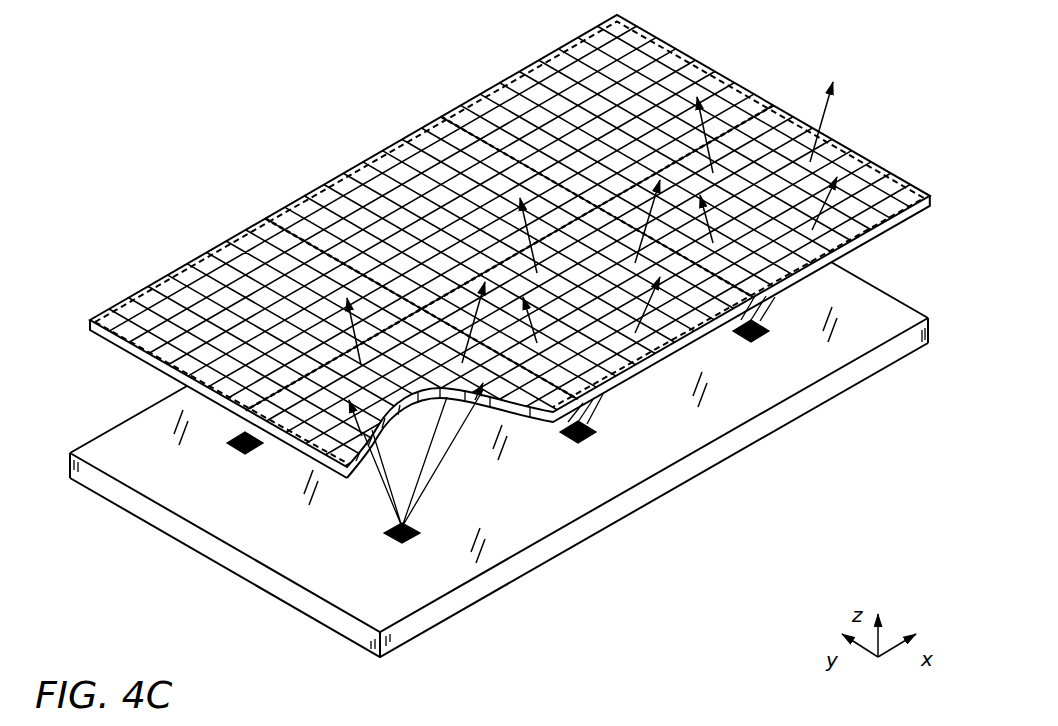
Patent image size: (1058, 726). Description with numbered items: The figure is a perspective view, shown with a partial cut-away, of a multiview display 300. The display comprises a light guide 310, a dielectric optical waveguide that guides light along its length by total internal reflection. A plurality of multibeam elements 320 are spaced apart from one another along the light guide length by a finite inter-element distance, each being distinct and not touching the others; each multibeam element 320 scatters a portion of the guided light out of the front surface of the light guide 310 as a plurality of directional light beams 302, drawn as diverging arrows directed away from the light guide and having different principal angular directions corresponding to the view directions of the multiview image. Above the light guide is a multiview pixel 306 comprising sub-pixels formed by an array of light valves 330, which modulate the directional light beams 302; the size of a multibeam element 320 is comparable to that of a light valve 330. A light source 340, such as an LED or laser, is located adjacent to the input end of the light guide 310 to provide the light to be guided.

The multiview display 300 is at (180, 100).
The directional light beams 302 is at (857, 98).
The multiview pixel 306 is at (435, 112).
The light guide 310 is at (499, 459).
The multibeam elements 320 is at (768, 338).
The array of light valves 330 is at (510, 252).
The light source 340 is at (210, 551).